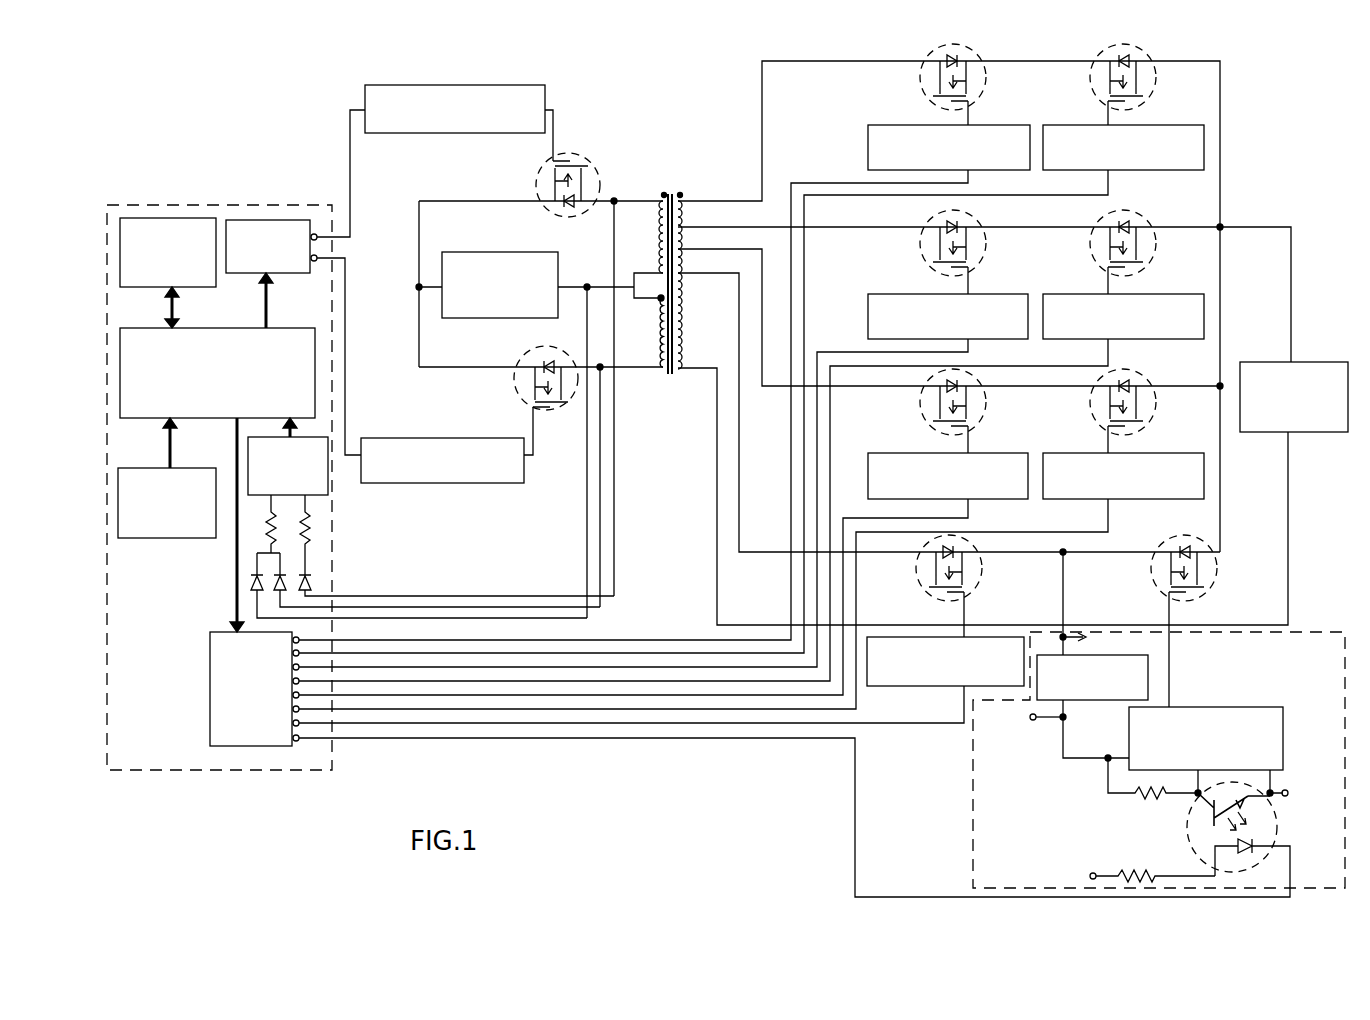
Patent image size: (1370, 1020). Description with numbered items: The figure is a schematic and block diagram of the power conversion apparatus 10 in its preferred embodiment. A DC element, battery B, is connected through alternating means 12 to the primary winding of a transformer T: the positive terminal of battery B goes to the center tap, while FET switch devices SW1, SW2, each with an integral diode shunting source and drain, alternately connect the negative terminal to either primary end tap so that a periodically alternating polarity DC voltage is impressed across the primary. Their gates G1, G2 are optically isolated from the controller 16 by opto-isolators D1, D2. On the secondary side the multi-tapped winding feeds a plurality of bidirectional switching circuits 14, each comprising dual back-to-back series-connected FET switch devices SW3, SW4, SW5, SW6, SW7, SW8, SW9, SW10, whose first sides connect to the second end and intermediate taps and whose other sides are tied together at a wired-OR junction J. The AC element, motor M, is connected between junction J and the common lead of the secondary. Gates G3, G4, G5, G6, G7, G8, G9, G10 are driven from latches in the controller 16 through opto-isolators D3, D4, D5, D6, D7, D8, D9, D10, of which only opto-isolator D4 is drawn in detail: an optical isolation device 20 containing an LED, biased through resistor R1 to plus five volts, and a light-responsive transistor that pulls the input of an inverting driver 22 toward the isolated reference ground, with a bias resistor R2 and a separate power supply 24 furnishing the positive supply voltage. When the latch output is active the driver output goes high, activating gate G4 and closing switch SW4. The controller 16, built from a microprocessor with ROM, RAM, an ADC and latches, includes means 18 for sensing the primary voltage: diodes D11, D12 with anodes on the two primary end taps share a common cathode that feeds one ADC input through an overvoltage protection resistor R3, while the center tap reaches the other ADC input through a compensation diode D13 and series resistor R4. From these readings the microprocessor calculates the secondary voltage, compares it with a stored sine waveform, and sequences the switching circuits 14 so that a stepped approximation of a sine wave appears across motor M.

The power conversion apparatus 10 is at (1284, 102).
The alternating means 12 is at (602, 140).
The switching circuits 14 is at (814, 790).
The controller 16 is at (282, 770).
The sensing means 18 is at (396, 523).
The optical isolation device 20 is at (1278, 818).
The inverting driver 22 is at (1283, 733).
The power supply 24 is at (1148, 690).
The battery B is at (548, 318).
The transformer T is at (691, 194).
The wired-OR junction J is at (1222, 226).
The motor M is at (1324, 362).
The switch device SW1 is at (523, 349).
The switch device SW2 is at (598, 173).
The switch device SW3 is at (914, 582).
The switch device SW4 is at (1148, 569).
The switch device SW5 is at (922, 415).
The switch device SW6 is at (1084, 413).
The switch device SW7 is at (922, 256).
The switch device SW8 is at (1092, 254).
The switch device SW9 is at (920, 90).
The switch device SW10 is at (1090, 88).
The gate G1 is at (533, 422).
The gate G2 is at (551, 153).
The gate G3 is at (974, 620).
The gate G4 is at (1169, 616).
The gate G5 is at (972, 444).
The gate G6 is at (1104, 444).
The gate G7 is at (968, 288).
The gate G8 is at (1108, 288).
The gate G9 is at (972, 118).
The gate G10 is at (1104, 118).
The opto-isolator D1 is at (472, 483).
The opto-isolator D2 is at (540, 85).
The opto-isolator D3 is at (918, 686).
The opto-isolator D4 is at (1344, 632).
The opto-isolator D5 is at (866, 458).
The opto-isolator D6 is at (1200, 460).
The opto-isolator D7 is at (868, 308).
The opto-isolator D8 is at (1204, 339).
The opto-isolator D9 is at (868, 124).
The opto-isolator D10 is at (1204, 133).
The diode D11 is at (252, 579).
The diode D12 is at (284, 578).
The compensation diode D13 is at (310, 578).
The resistor R1 is at (1140, 872).
The bias resistor R2 is at (1146, 798).
The overvoltage protection resistor R3 is at (266, 542).
The series resistor R4 is at (308, 530).